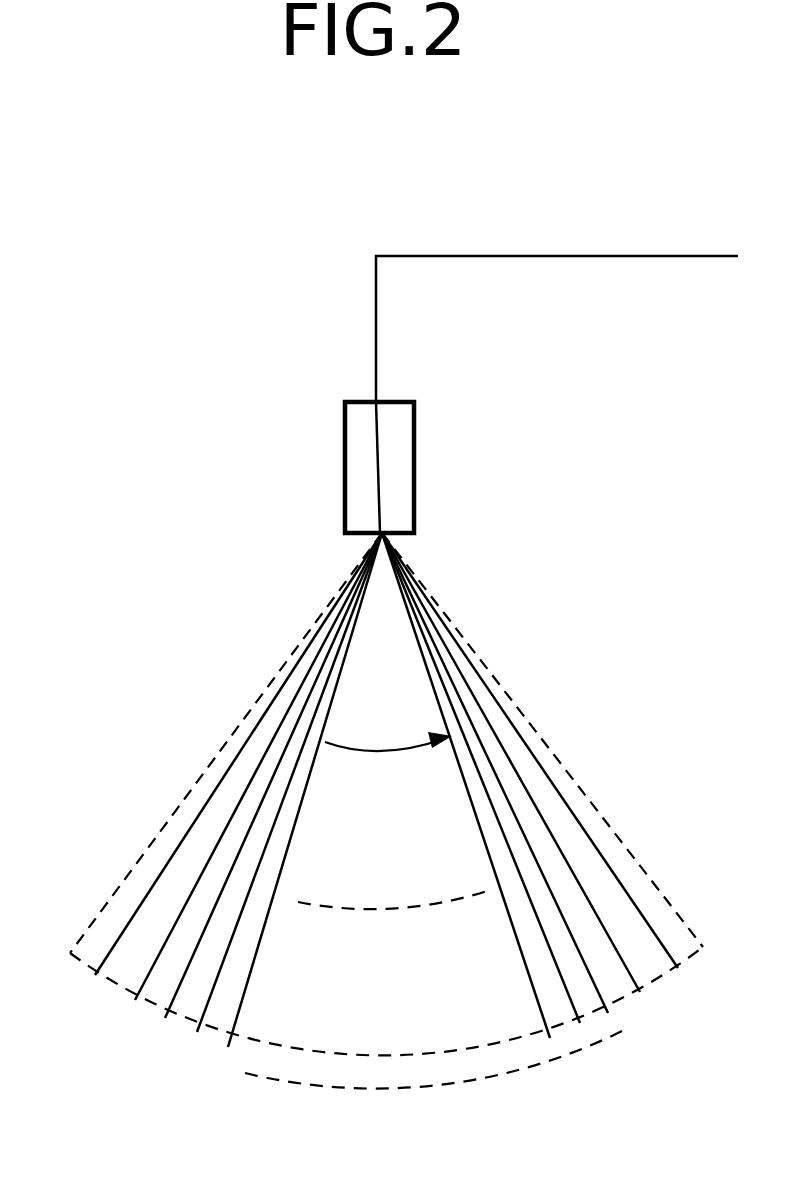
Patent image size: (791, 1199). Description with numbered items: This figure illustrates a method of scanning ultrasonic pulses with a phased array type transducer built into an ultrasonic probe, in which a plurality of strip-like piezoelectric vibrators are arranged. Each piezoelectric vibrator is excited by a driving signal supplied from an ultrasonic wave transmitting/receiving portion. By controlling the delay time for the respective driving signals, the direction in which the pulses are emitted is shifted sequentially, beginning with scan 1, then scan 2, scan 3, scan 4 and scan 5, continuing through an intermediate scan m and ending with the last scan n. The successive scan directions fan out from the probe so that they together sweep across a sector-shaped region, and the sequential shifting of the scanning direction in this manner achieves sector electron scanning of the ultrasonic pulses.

The scan 1 is at (232, 773).
The scan 2 is at (250, 786).
The scan 3 is at (265, 797).
The scan 4 is at (281, 806).
The scan 5 is at (298, 811).
The scan m is at (524, 785).
The scan n is at (542, 771).